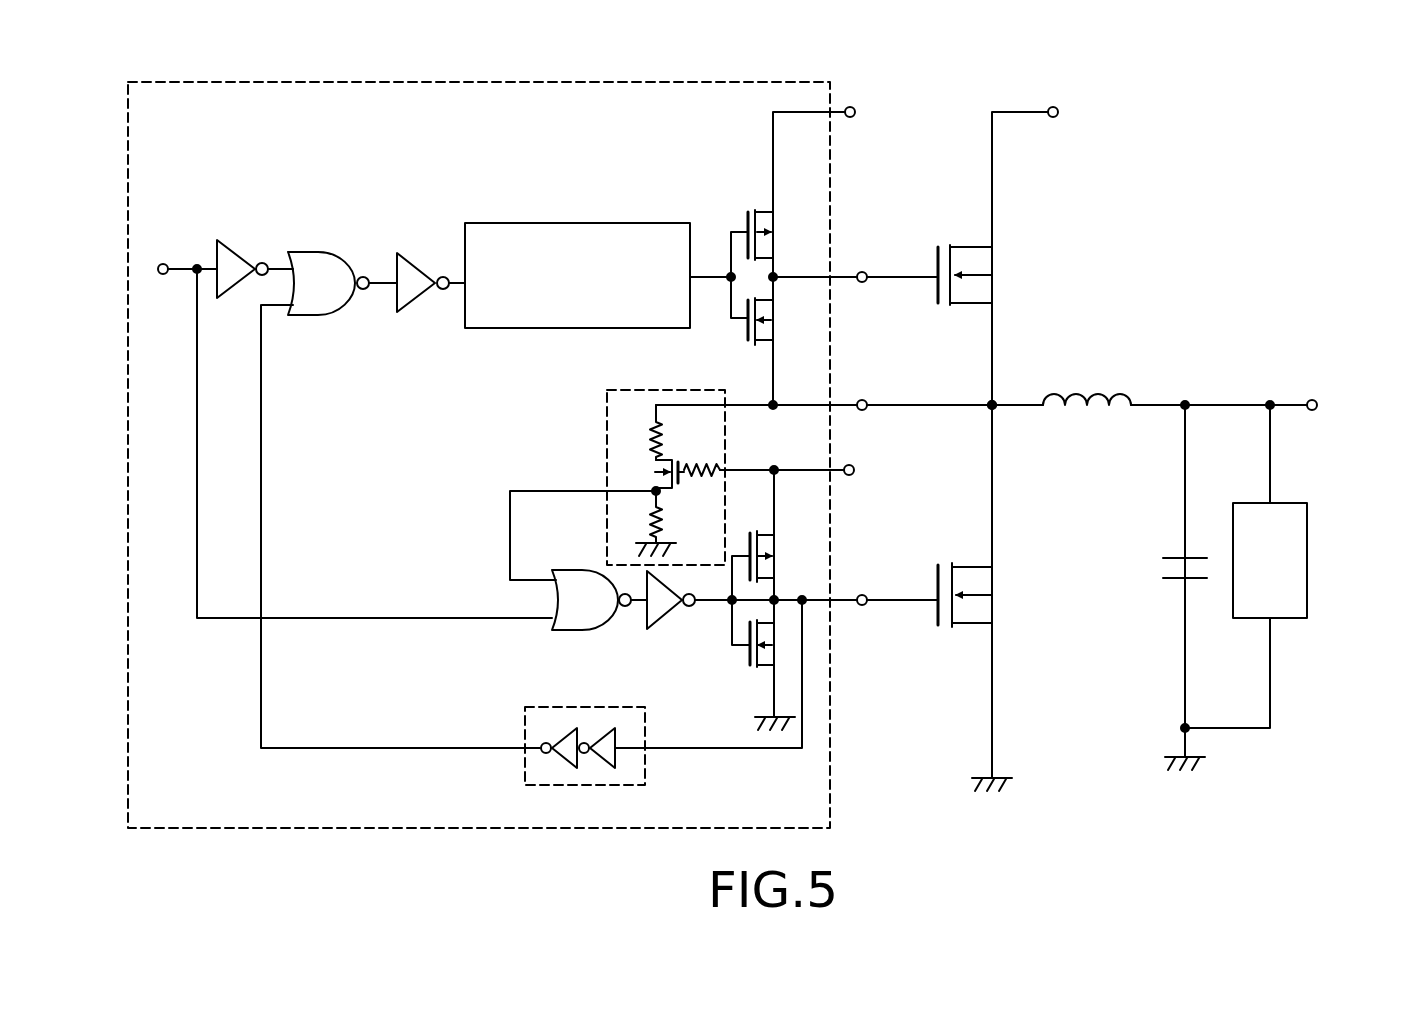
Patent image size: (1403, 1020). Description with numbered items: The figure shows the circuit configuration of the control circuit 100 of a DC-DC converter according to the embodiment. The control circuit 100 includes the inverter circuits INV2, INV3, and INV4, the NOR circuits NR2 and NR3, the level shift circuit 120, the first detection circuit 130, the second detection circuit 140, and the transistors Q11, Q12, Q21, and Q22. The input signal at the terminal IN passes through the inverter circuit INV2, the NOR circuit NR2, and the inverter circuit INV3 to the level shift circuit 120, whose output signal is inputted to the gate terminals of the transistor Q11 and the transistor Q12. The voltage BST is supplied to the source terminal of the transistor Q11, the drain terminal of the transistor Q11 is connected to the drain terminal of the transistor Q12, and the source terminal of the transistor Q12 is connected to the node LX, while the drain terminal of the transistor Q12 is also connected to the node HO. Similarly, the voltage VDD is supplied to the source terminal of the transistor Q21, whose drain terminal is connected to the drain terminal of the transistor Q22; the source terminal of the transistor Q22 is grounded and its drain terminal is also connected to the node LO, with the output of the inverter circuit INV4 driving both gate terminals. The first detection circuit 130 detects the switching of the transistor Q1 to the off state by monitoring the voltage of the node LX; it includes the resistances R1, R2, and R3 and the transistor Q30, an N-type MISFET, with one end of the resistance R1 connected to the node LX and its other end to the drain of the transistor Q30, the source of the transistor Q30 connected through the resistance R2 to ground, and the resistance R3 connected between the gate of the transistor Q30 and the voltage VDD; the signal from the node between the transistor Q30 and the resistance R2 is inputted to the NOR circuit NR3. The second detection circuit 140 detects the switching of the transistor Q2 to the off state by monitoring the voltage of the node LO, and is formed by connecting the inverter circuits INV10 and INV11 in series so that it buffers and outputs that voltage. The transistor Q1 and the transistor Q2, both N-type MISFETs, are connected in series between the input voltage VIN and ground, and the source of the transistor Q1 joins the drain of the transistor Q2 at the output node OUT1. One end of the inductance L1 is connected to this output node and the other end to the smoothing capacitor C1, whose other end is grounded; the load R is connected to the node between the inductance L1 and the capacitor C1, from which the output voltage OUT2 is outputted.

The control circuit 100 is at (597, 82).
The level shift circuit 120 is at (597, 223).
The first detection circuit 130 is at (645, 390).
The second detection circuit 140 is at (575, 707).
The inverter circuit INV2 is at (234, 250).
The NOR circuit NR2 is at (312, 252).
The inverter circuit INV3 is at (410, 256).
The transistor Q11 is at (784, 235).
The transistor Q12 is at (784, 320).
The transistor Q1 is at (979, 275).
The transistor Q2 is at (979, 595).
The transistor Q21 is at (786, 556).
The transistor Q22 is at (746, 660).
The transistor Q30 is at (686, 462).
The resistance R1 is at (639, 432).
The resistance R2 is at (639, 517).
The resistance R3 is at (702, 485).
The NOR circuit NR3 is at (596, 586).
The inverter circuit INV4 is at (678, 613).
The inverter circuit INV10 is at (563, 762).
The inverter circuit INV11 is at (617, 762).
The inductance L1 is at (1087, 415).
The capacitor C1 is at (1165, 565).
The load R is at (1307, 558).
The input voltage IN is at (159, 256).
The voltage BST is at (875, 112).
The input voltage VIN is at (1075, 112).
The node HO is at (862, 262).
The node LX is at (858, 392).
The voltage VDD is at (867, 456).
The node LO is at (859, 587).
The output node OUT1 is at (995, 403).
The output voltage OUT2 is at (1345, 405).